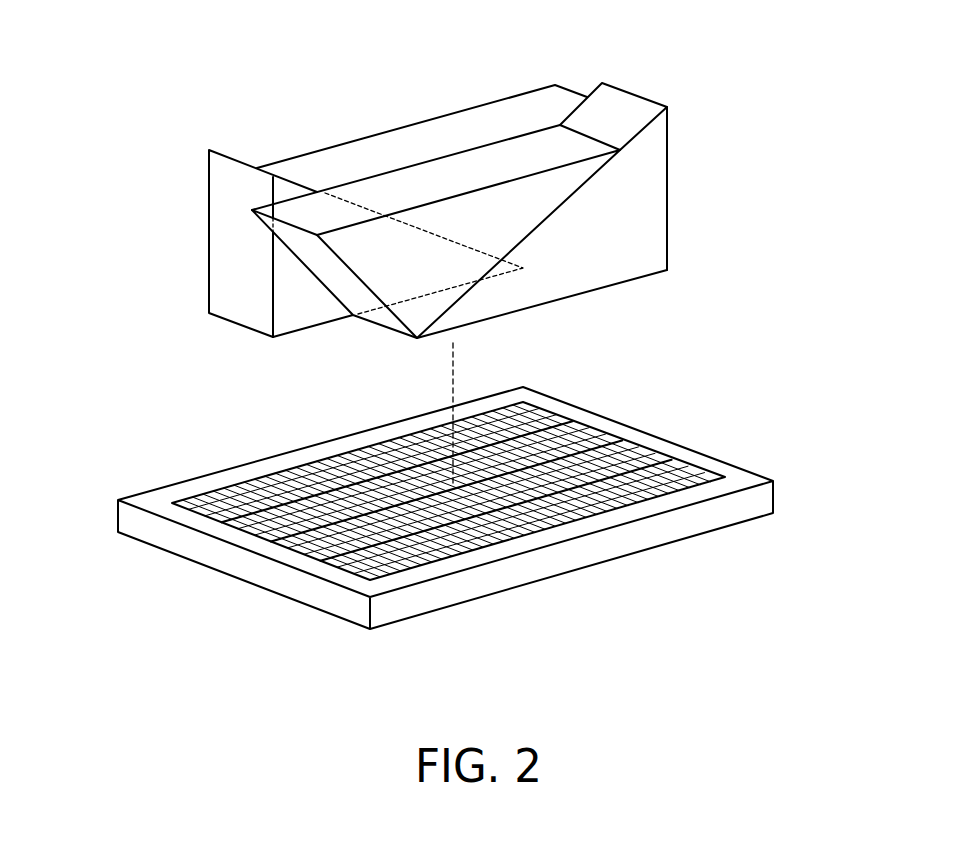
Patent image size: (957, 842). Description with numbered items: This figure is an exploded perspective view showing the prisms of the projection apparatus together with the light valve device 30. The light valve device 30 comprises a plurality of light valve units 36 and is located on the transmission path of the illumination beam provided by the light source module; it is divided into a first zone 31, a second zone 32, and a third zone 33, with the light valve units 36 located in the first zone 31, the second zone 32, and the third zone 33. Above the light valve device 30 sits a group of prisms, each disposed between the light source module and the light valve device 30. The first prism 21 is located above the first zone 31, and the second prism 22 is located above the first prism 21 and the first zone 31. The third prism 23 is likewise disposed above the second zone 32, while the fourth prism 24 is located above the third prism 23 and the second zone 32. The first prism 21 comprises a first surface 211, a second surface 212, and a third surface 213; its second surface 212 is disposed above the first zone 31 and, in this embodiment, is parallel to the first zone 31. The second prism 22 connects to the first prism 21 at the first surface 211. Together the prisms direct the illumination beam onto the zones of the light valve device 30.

The first prism 21 is at (501, 257).
The first surface 211 is at (603, 101).
The second surface 212 is at (642, 278).
The third surface 213 is at (669, 138).
The second prism 22 is at (391, 277).
The third prism 23 is at (222, 247).
The fourth prism 24 is at (436, 133).
The light valve device 30 is at (522, 505).
The first zone 31 is at (667, 473).
The second zone 32 is at (552, 427).
The third zone 33 is at (612, 445).
The light valve units 36 is at (488, 422).